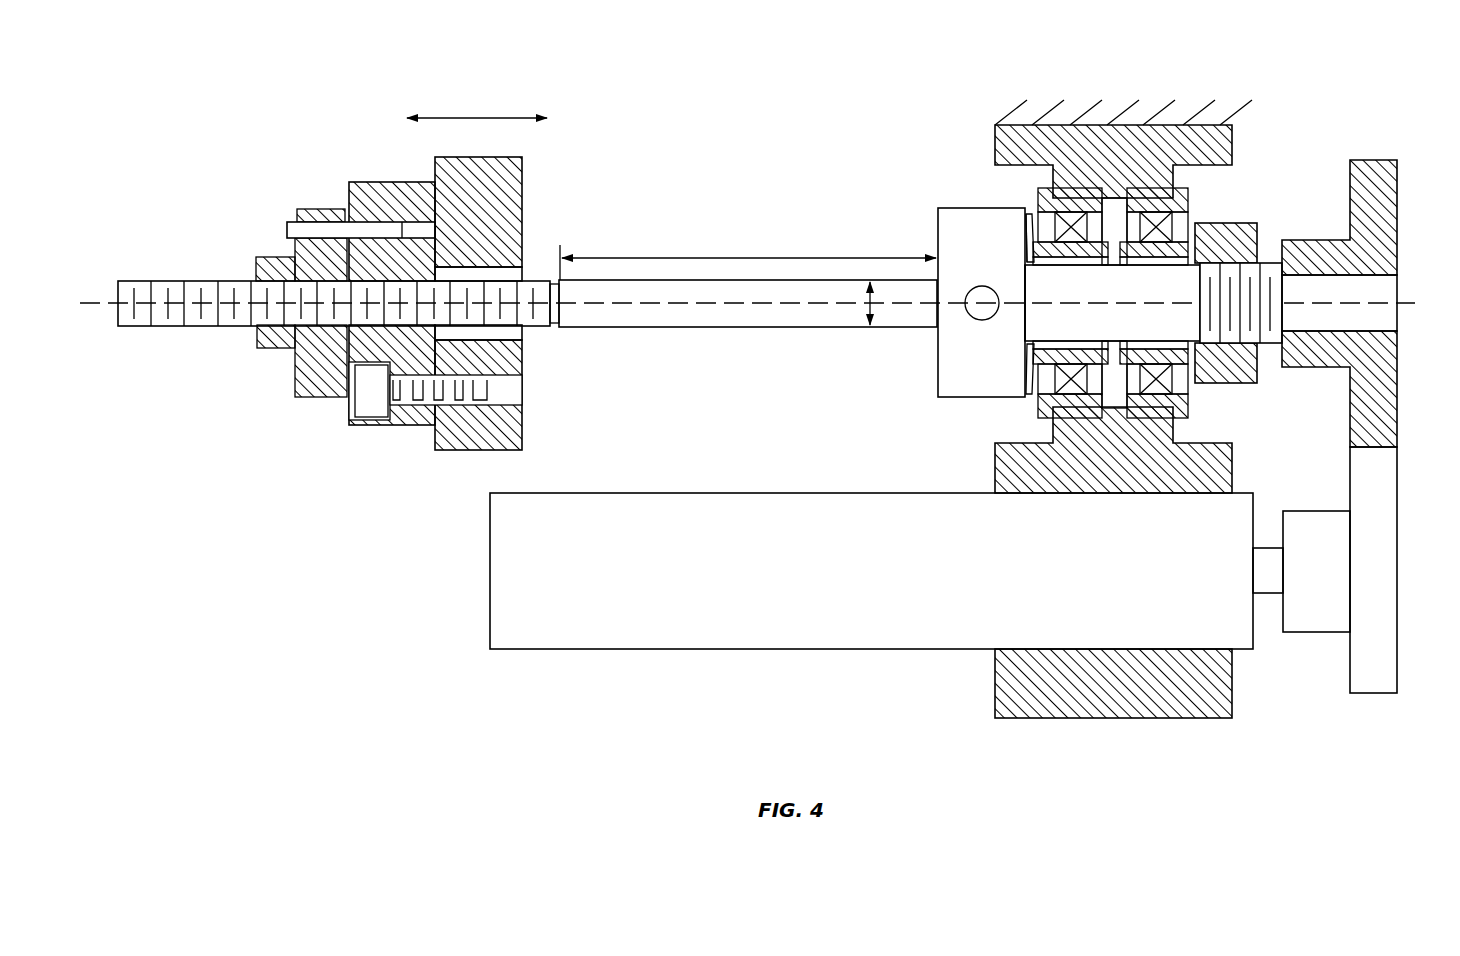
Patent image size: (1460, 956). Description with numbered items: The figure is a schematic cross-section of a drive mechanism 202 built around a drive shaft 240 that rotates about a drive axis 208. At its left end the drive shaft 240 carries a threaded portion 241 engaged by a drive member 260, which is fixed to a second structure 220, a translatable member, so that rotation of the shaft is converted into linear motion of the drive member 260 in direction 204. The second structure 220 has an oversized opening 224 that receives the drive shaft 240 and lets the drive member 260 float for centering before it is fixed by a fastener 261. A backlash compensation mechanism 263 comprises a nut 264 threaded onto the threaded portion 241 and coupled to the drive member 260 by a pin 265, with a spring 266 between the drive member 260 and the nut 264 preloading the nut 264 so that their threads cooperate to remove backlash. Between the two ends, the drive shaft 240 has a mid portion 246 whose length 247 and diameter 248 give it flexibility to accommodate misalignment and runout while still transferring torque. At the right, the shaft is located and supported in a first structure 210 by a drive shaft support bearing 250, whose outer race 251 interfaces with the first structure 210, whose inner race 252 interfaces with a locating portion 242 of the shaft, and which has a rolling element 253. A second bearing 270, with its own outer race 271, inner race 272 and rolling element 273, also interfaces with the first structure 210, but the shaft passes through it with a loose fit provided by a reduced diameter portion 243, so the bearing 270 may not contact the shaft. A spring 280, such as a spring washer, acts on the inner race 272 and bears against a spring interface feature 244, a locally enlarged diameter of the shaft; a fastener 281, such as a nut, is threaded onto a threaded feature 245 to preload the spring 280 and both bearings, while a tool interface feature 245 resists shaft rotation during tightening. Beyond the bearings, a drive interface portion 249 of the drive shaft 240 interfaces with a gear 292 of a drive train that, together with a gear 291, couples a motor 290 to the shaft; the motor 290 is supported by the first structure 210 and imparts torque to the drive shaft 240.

The drive mechanism 202 is at (768, 85).
The direction 204 is at (475, 118).
The drive axis 208 is at (675, 328).
The first structure 210 is at (1232, 140).
The second structure 220 is at (522, 158).
The opening 224 is at (536, 275).
The drive shaft 240 is at (748, 266).
The threaded portion 241 is at (205, 265).
The locating portion 242 is at (1168, 342).
The reduced diameter portion 243 is at (1050, 315).
The spring interface feature 244 is at (1110, 331).
The threaded feature / tool interface feature 245 is at (970, 315).
The mid portion 246 is at (712, 248).
The length 247 is at (775, 258).
The diameter 248 is at (868, 308).
The drive interface portion 249 is at (1377, 288).
The drive shaft support bearing 250 is at (1205, 283).
The outer race 251 is at (1187, 187).
The inner race 252 is at (1250, 235).
The rolling element 253 is at (1173, 223).
The drive member 260 is at (385, 182).
The fastener 261 is at (373, 403).
The backlash compensation mechanism 263 is at (292, 192).
The nut 264 is at (320, 398).
The pin 265 is at (320, 233).
The spring 266 is at (345, 348).
The bearing 270 is at (1020, 274).
The outer race 271 is at (1046, 187).
The inner race 272 is at (1023, 237).
The rolling element 273 is at (1047, 238).
The spring 280 is at (1028, 393).
The fastener 281 is at (1243, 383).
The motor 290 is at (785, 650).
The gear 291 is at (1375, 695).
The gear 292 is at (1375, 160).